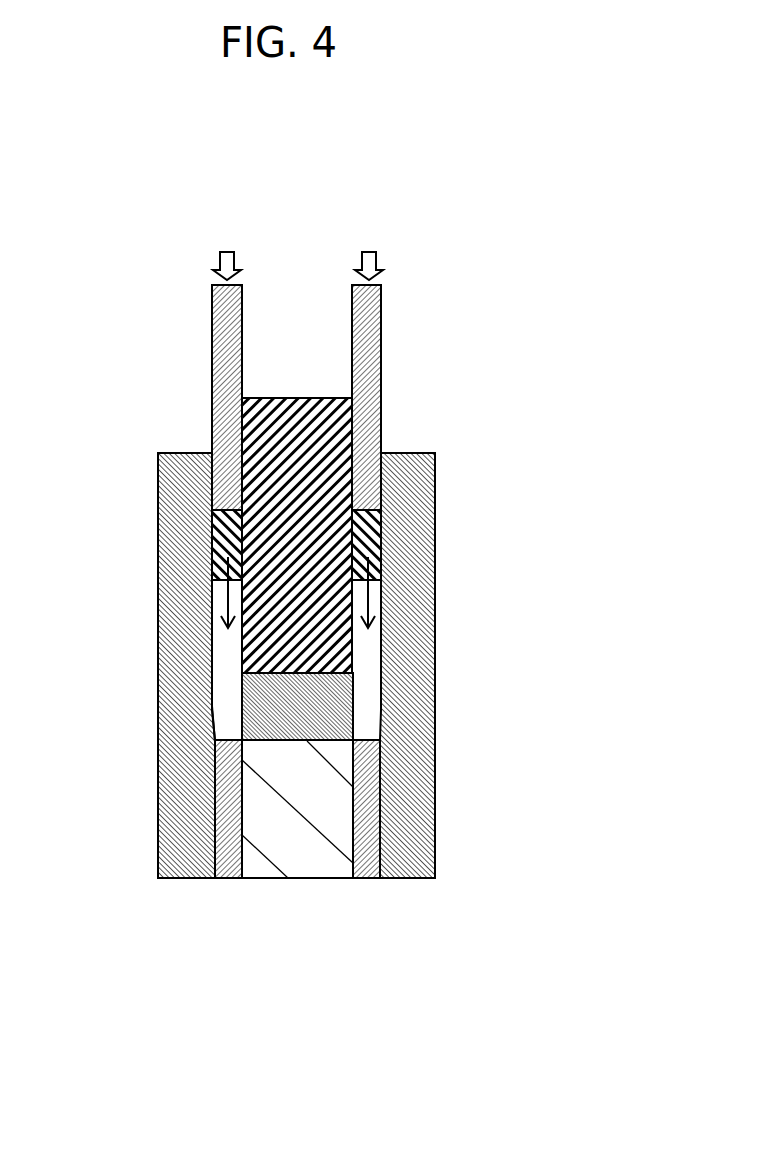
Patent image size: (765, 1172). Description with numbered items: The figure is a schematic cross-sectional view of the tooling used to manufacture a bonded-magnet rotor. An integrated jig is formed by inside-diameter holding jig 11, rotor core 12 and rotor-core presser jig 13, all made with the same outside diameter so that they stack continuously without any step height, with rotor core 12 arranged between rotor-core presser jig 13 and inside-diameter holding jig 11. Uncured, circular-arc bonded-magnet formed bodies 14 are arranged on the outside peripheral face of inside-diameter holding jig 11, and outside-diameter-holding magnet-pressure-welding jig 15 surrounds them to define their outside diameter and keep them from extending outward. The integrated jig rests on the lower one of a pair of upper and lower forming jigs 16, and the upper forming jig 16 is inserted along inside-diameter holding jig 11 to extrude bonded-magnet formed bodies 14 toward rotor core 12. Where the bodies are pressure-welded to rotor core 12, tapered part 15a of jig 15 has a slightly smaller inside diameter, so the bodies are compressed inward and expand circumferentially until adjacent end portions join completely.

The inside-diameter holding jig 11 is at (307, 444).
The rotor core 12 is at (323, 701).
The rotor-core presser jig 13 is at (318, 806).
The bonded-magnet formed bodies 14 is at (366, 541).
The outside-diameter-holding magnet-pressure-welding jig 15 is at (187, 730).
The tapered part 15a is at (210, 712).
The forming jigs 16 is at (227, 398).